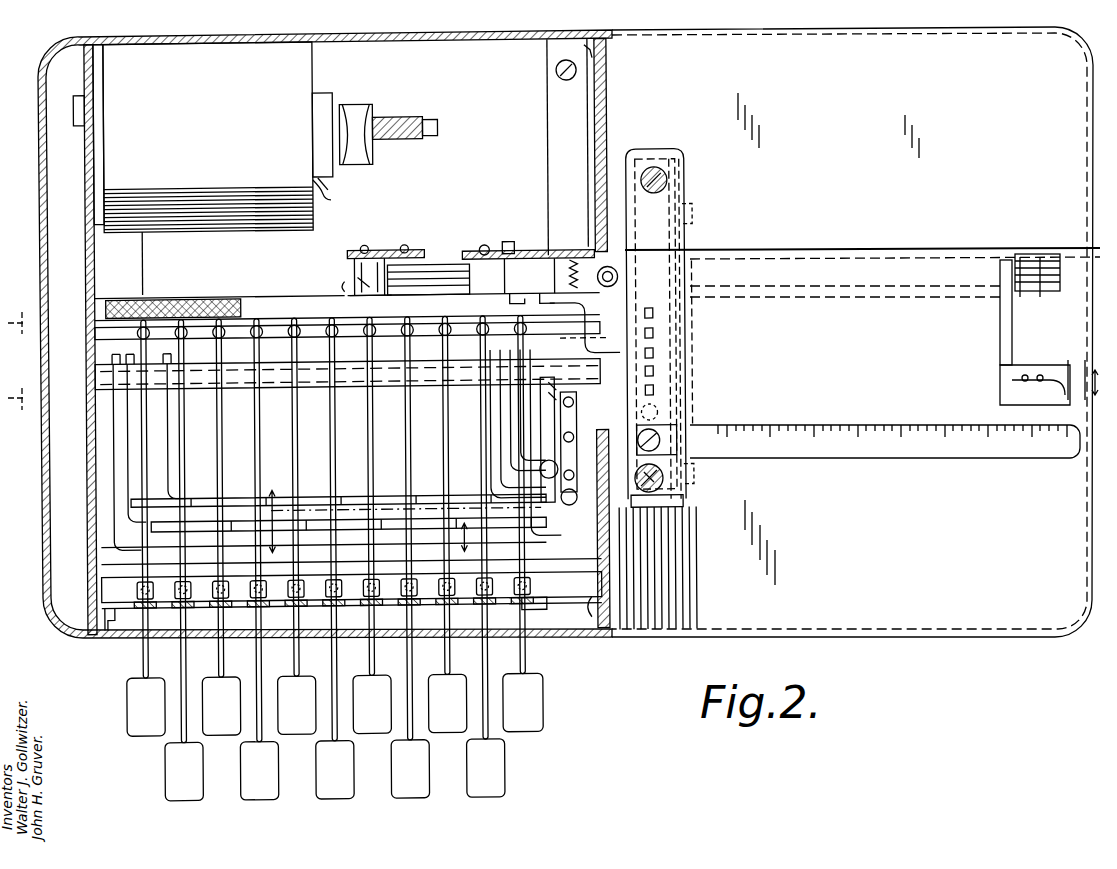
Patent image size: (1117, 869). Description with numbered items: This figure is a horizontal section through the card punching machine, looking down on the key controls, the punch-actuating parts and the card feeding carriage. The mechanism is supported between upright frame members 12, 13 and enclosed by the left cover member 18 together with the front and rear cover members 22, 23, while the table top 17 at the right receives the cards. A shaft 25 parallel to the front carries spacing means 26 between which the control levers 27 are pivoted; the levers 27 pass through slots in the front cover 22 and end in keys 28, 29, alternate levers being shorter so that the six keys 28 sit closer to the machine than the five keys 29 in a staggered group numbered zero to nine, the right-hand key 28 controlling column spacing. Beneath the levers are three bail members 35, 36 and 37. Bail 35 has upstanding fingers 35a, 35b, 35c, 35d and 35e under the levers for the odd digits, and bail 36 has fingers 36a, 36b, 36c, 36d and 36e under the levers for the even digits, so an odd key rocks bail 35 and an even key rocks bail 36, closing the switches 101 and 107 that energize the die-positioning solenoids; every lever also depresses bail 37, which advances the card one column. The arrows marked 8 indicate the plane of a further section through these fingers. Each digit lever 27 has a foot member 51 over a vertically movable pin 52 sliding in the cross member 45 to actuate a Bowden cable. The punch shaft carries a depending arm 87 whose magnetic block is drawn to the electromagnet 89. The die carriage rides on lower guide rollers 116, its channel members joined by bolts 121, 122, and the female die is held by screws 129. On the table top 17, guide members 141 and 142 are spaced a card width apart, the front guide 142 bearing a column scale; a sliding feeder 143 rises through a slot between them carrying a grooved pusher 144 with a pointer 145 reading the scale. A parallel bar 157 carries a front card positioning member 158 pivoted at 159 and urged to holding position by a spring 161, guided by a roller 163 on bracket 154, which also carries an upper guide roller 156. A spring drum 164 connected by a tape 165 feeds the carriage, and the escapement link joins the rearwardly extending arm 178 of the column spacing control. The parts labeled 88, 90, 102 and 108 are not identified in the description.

The spacing dimension 8 is at (365, 533).
The upright frame member 12 is at (86, 205).
The upright frame member 13 is at (608, 119).
The table top member 17 is at (852, 332).
The cover member 18 is at (48, 465).
The front cover member 22 is at (532, 634).
The rear cover member 23 is at (510, 41).
The shaft 25 is at (355, 380).
The spacing means 26 is at (317, 380).
The control lever 27 is at (178, 658).
The key 28 is at (202, 678).
The key 29 is at (212, 788).
The bail member 35 is at (458, 494).
The upstanding finger 35a is at (189, 494).
The upstanding finger 35b is at (264, 494).
The upstanding finger 35c is at (341, 494).
The upstanding finger 35d is at (415, 494).
The upstanding finger 35e is at (467, 476).
The bail member 36 is at (463, 526).
The upstanding finger 36a is at (148, 517).
The upstanding finger 36b is at (226, 517).
The upstanding finger 36c is at (304, 517).
The upstanding finger 36d is at (378, 526).
The upstanding finger 36e is at (416, 526).
The bail member 37 is at (534, 546).
The cross member 45 is at (106, 584).
The foot member 51 is at (161, 603).
The pin 52 is at (198, 619).
The depending arm 87 is at (398, 122).
The spool 88 is at (355, 102).
The electromagnet 89 is at (218, 169).
The spring 90 is at (328, 198).
The switch 101 is at (548, 482).
The bracket 102 is at (585, 327).
The switch 107 is at (658, 559).
The pivot 108 is at (660, 362).
The lower guide roller 116 is at (690, 219).
The bolt 121 is at (668, 174).
The bolt 122 is at (668, 491).
The screw 129 is at (660, 426).
The horizontal guide member 141 is at (815, 240).
The front guide member 142 is at (849, 446).
The sliding feeder 143 is at (1015, 273).
The grooved pushing member 144 is at (1045, 352).
The pointer 145 is at (1085, 398).
The bracket 154 is at (362, 248).
The upper guide roller 156 is at (405, 247).
The parallel bar 157 is at (435, 263).
The front card positioning member 158 is at (660, 320).
The pivot 159 is at (620, 277).
The spring 161 is at (566, 272).
The roller 163 is at (345, 279).
The spring drum 164 is at (205, 293).
The tape 165 is at (262, 295).
The rearwardly extending arm 178 is at (510, 243).